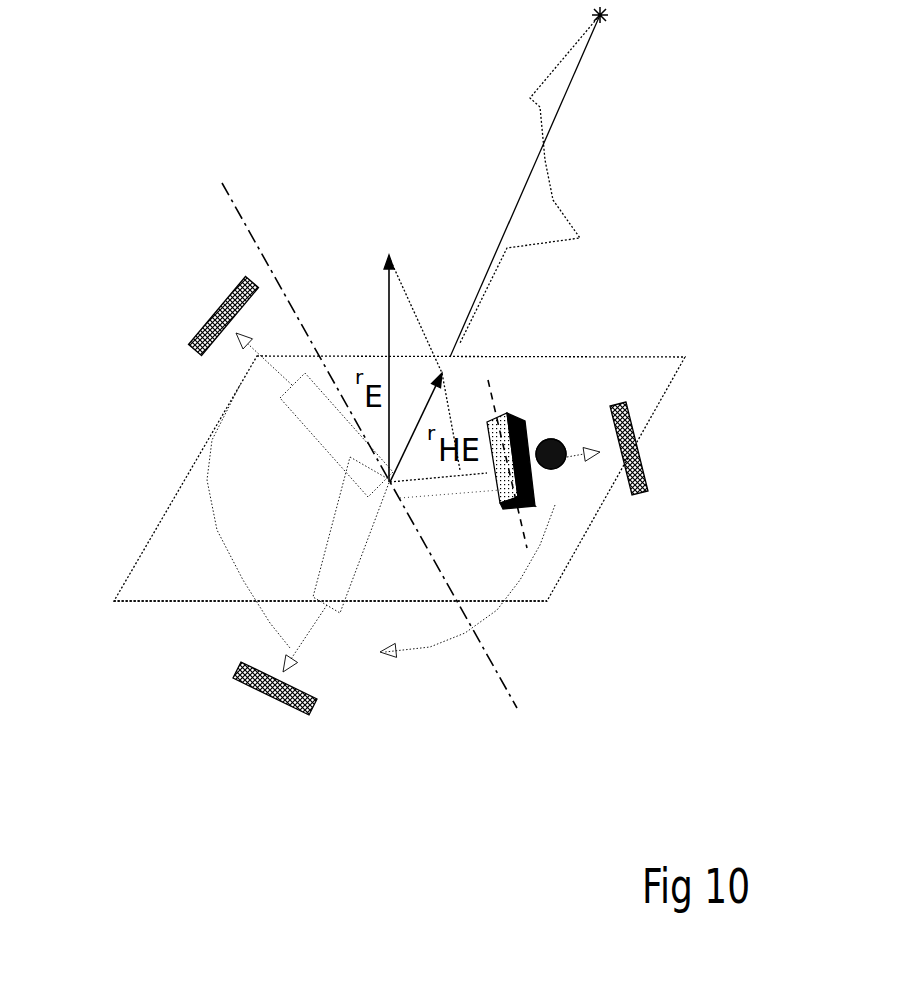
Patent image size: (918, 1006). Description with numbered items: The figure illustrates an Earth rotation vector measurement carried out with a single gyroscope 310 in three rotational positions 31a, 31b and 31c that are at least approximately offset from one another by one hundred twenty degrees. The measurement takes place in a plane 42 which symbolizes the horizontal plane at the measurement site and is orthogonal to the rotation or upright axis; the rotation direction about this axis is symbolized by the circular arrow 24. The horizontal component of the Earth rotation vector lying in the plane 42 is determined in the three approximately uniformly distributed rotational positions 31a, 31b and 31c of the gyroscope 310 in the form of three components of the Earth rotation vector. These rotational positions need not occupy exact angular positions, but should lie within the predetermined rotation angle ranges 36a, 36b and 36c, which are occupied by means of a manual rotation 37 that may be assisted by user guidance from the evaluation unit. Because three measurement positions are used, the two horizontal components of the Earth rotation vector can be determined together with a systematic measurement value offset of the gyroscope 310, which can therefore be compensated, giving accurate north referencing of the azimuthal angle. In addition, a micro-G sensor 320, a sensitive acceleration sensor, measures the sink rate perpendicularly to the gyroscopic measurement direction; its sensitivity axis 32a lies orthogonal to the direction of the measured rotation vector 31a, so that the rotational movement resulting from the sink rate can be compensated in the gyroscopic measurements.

The circular arrow 24 is at (315, 445).
The plane 42 is at (380, 478).
The rotation 37 is at (386, 652).
The sensitivity axis 32a is at (571, 410).
The micro-G sensor 320 is at (581, 413).
The gyroscope 310 is at (622, 531).
The first rotational position 31a is at (622, 504).
The second rotational position 31b is at (360, 677).
The third rotational position 31c is at (208, 369).
The first rotation angle range 36a is at (674, 463).
The second rotation angle range 36b is at (333, 742).
The third rotation angle range 36c is at (188, 316).